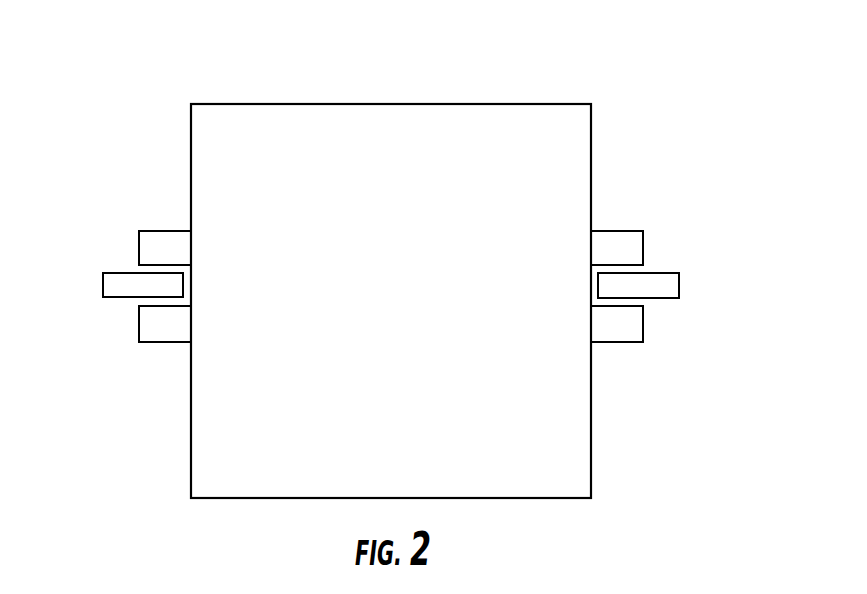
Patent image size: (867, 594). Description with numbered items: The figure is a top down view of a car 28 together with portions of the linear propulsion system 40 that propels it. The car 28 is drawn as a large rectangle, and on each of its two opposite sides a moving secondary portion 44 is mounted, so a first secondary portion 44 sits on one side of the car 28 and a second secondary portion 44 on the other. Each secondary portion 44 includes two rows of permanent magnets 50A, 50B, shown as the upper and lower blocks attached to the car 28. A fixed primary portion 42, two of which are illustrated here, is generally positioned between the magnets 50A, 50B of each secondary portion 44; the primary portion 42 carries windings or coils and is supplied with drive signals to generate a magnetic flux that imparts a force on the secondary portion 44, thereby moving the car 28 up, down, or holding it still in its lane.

The linear propulsion system 40 is at (693, 58).
The car 28 is at (458, 104).
The secondary portion 44 is at (156, 230).
The permanent magnets 50A is at (139, 242).
The permanent magnets 50B is at (139, 332).
The primary portion 42 is at (110, 287).